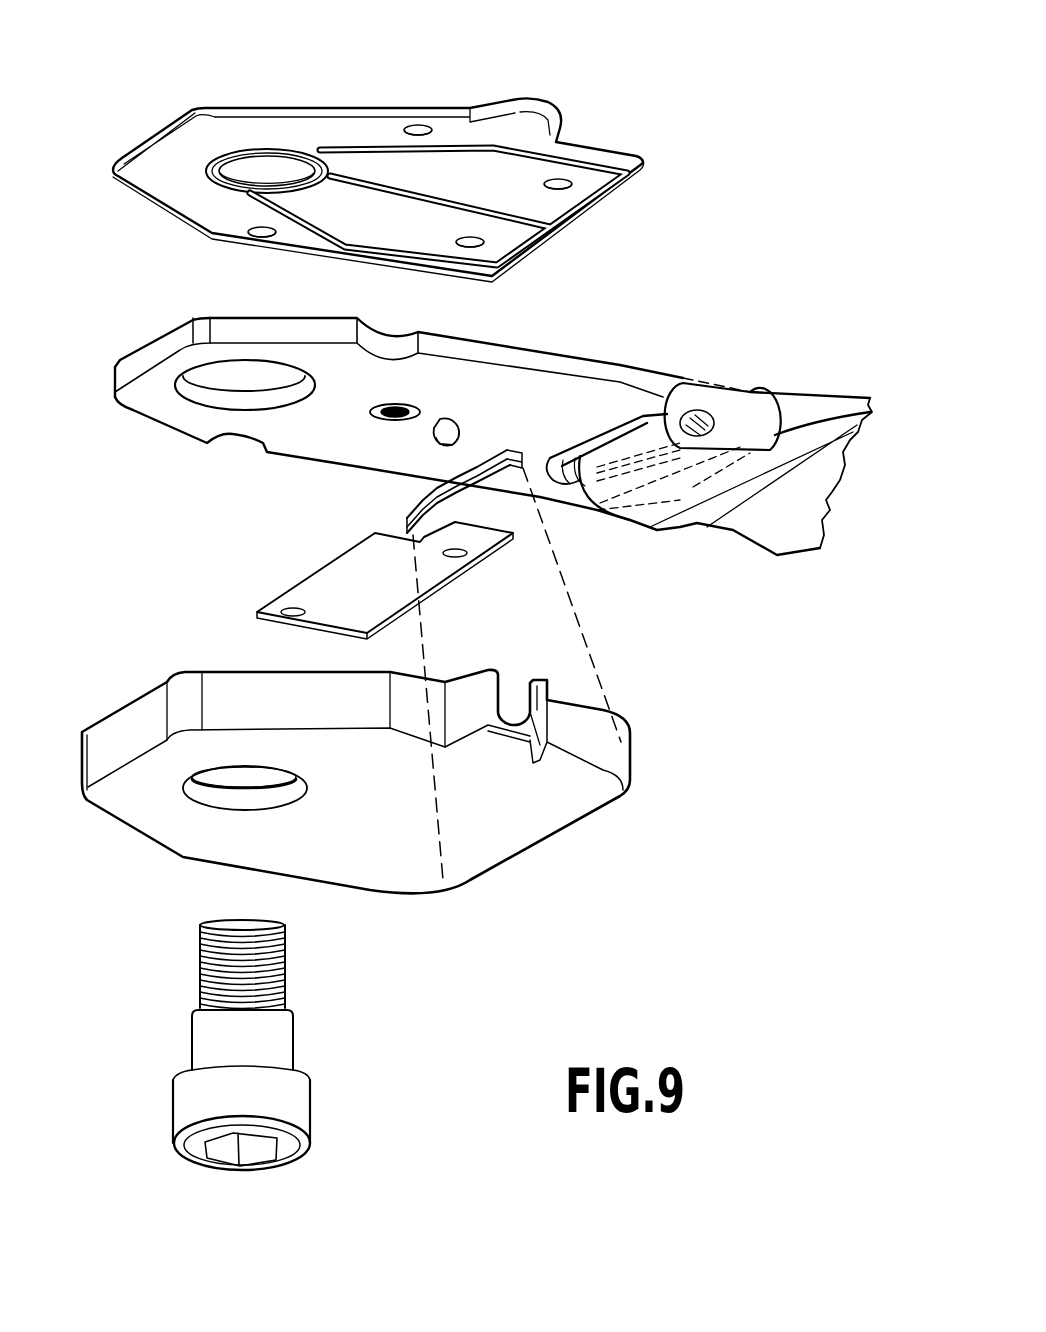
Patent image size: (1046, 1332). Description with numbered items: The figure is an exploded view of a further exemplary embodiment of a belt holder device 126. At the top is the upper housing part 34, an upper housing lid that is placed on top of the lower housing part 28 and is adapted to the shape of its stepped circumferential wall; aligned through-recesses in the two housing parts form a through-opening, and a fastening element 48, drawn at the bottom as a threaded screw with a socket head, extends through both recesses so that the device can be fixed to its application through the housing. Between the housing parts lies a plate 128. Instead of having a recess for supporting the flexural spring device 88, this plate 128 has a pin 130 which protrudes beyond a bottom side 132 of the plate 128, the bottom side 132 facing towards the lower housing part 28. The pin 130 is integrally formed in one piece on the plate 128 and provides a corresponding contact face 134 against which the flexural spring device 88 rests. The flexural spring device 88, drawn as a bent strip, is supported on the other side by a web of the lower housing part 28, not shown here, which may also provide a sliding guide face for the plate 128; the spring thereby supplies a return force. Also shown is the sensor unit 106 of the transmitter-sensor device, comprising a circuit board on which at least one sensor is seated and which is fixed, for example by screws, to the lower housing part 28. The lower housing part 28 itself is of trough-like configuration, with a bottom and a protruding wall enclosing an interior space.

The belt holder device 126 is at (446, 68).
The upper housing part 34 is at (590, 137).
The plate 128 is at (598, 405).
The bottom side 132 is at (178, 413).
The contact face 134 is at (462, 430).
The pin 130 is at (433, 440).
The flexural spring device 88 is at (483, 463).
The sensor unit 106 is at (335, 582).
The lower housing part 28 is at (463, 857).
The fastening element 48 is at (336, 1061).